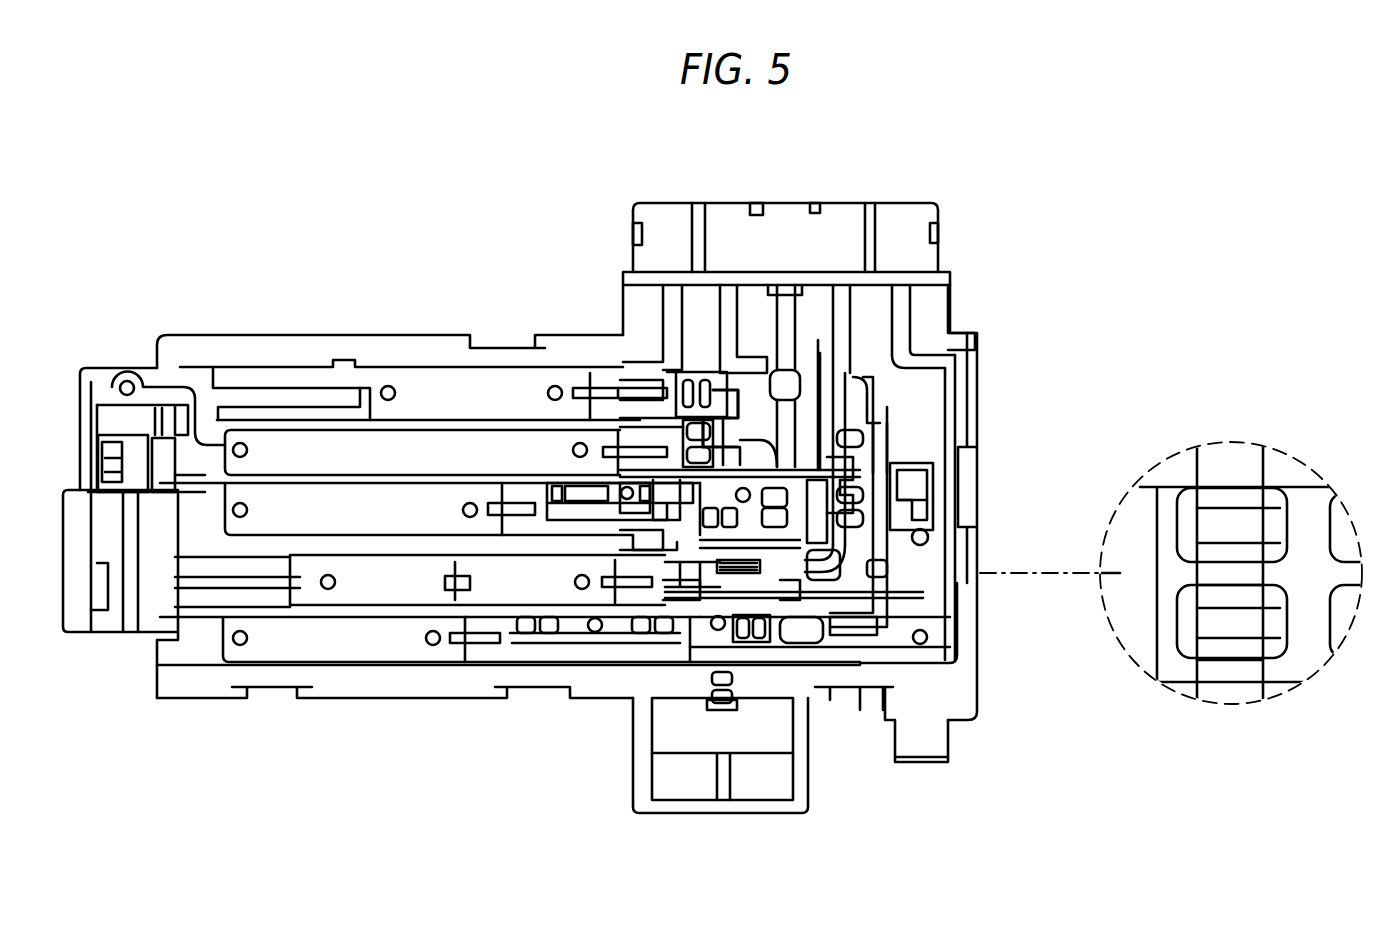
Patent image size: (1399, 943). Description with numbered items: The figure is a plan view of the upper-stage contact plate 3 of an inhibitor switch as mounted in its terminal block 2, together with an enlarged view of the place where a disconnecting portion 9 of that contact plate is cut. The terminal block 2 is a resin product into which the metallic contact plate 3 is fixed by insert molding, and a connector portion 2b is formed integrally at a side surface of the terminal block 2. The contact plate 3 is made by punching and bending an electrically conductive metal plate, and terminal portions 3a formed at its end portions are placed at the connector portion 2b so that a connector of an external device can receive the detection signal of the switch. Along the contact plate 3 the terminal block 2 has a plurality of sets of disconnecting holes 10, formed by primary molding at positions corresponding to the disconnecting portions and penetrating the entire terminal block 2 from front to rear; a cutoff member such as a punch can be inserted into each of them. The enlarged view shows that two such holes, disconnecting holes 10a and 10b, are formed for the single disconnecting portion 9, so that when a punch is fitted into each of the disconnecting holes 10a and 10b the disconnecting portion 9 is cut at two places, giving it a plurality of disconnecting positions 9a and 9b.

The terminal block 2 is at (372, 346).
The connector portion 2b is at (950, 256).
The contact plate (upper stage) 3 is at (453, 385).
The terminal portions 3a is at (670, 287).
The disconnecting portion 9 is at (1213, 705).
The disconnecting position 9a is at (1196, 526).
The disconnecting position 9b is at (1197, 622).
The disconnecting holes 10 is at (705, 440).
The disconnecting hole 10a is at (1272, 520).
The disconnecting hole 10b is at (1268, 627).